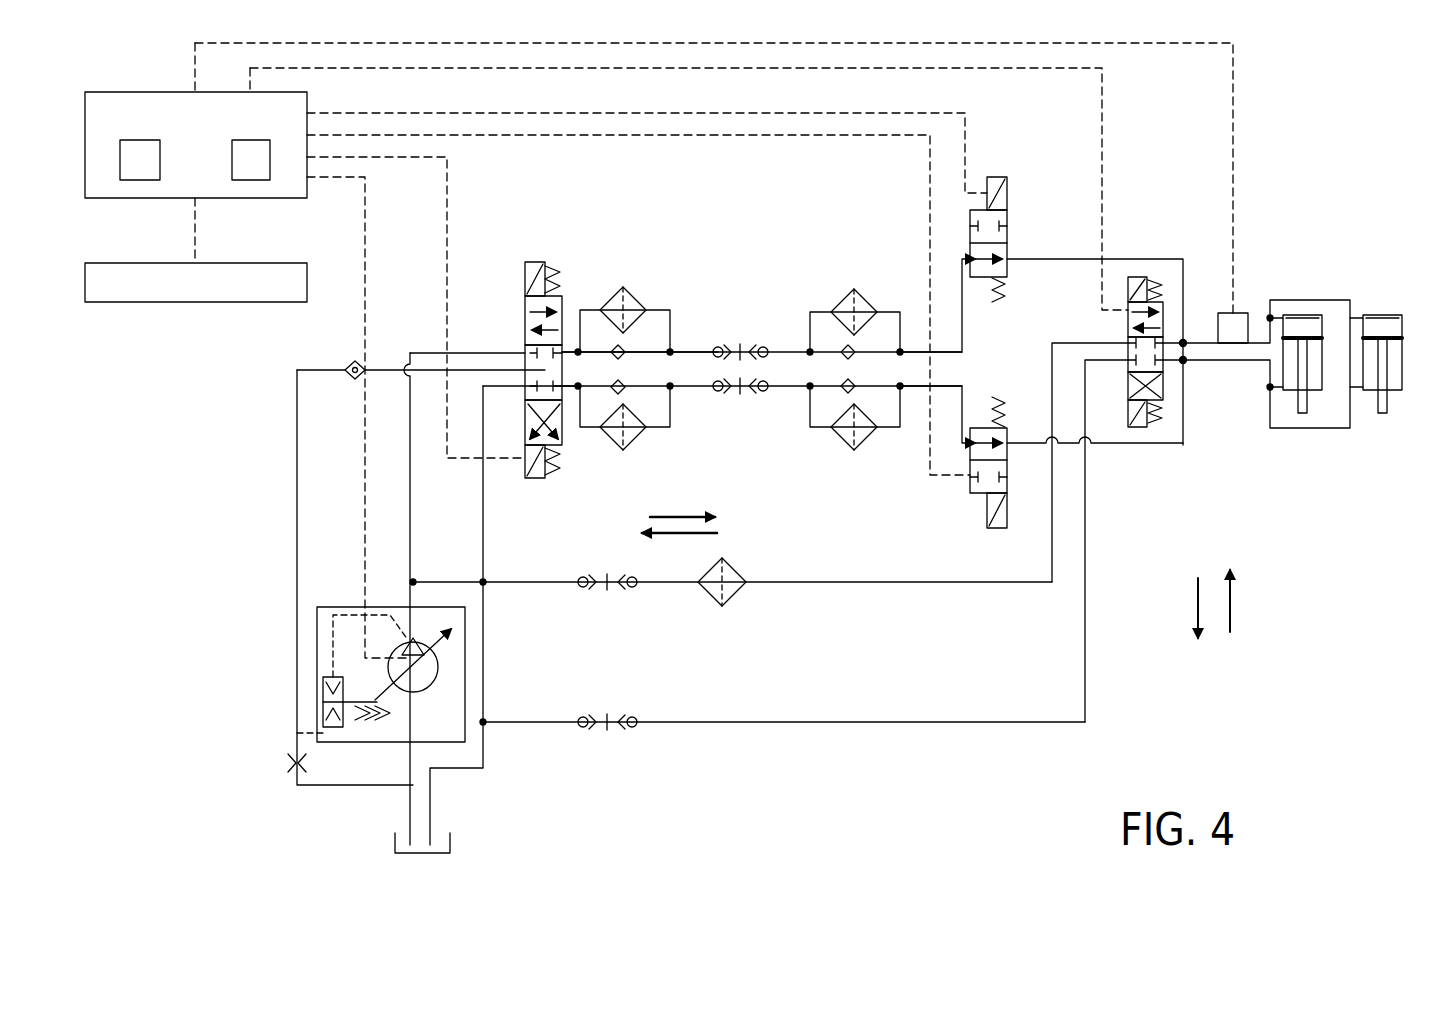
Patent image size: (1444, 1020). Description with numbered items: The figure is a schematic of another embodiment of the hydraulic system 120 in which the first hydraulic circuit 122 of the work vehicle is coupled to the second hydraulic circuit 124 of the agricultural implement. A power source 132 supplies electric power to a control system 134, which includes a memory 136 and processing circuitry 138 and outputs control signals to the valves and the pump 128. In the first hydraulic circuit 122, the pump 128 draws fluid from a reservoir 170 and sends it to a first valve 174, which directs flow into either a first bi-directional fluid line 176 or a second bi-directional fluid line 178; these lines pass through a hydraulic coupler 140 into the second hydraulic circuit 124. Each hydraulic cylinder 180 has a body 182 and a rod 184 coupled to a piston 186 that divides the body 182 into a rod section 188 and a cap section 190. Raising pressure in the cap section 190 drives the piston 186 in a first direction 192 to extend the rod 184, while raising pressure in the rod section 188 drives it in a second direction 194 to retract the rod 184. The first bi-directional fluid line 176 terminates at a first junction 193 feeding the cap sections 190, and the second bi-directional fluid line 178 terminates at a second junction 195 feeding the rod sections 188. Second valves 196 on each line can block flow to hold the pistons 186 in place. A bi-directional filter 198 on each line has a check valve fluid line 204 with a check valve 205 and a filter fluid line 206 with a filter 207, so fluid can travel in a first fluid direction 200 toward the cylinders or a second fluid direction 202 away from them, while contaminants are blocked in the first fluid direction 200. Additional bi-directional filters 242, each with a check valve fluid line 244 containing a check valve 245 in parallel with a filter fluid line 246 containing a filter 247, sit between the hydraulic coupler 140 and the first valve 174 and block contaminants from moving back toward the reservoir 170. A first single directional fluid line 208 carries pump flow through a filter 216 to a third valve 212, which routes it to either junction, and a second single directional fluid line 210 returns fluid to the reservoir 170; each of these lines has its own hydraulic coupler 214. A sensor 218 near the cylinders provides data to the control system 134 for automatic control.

The hydraulic system 120 is at (1252, 58).
The first hydraulic circuit 122 is at (381, 674).
The second hydraulic circuit 124 is at (1042, 205).
The pump 128 is at (440, 668).
The power source 132 is at (195, 302).
The control system 134 is at (142, 92).
The memory 136 is at (120, 170).
The processing circuitry 138 is at (270, 170).
The hydraulic coupler 140 is at (742, 380).
The reservoir 170 is at (393, 845).
The first valve 174 is at (535, 478).
The first bi-directional fluid line 176 is at (572, 343).
The second bi-directional fluid line 178 is at (572, 397).
The hydraulic cylinder 180 is at (1295, 145).
The body 182 is at (1402, 330).
The rod 184 is at (1318, 380).
The piston 186 is at (1327, 364).
The rod section 188 is at (1302, 405).
The cap section 190 is at (1300, 332).
The first direction 192 is at (1198, 607).
The first junction 193 is at (1183, 340).
The second direction 194 is at (1230, 607).
The second junction 195 is at (1185, 363).
The second valve 196 is at (1010, 266).
The bi-directional filter 198 is at (846, 358).
The first fluid direction 200 is at (680, 517).
The second fluid direction 202 is at (680, 533).
The check valve fluid line 204 is at (888, 328).
The check valve 205 is at (840, 382).
The filter fluid line 206 is at (930, 395).
The filter 207 is at (838, 300).
The first single directional fluid line 208 is at (510, 573).
The second single directional fluid line 210 is at (610, 735).
The third valve 212 is at (1140, 428).
The hydraulic coupler 214 is at (607, 586).
The filter 216 is at (710, 605).
The sensor 218 is at (1240, 313).
The additional bi-directional filter 242 is at (678, 338).
The check valve fluid line 244 is at (648, 352).
The check valve 245 is at (624, 392).
The filter fluid line 246 is at (670, 320).
The filter 247 is at (648, 298).